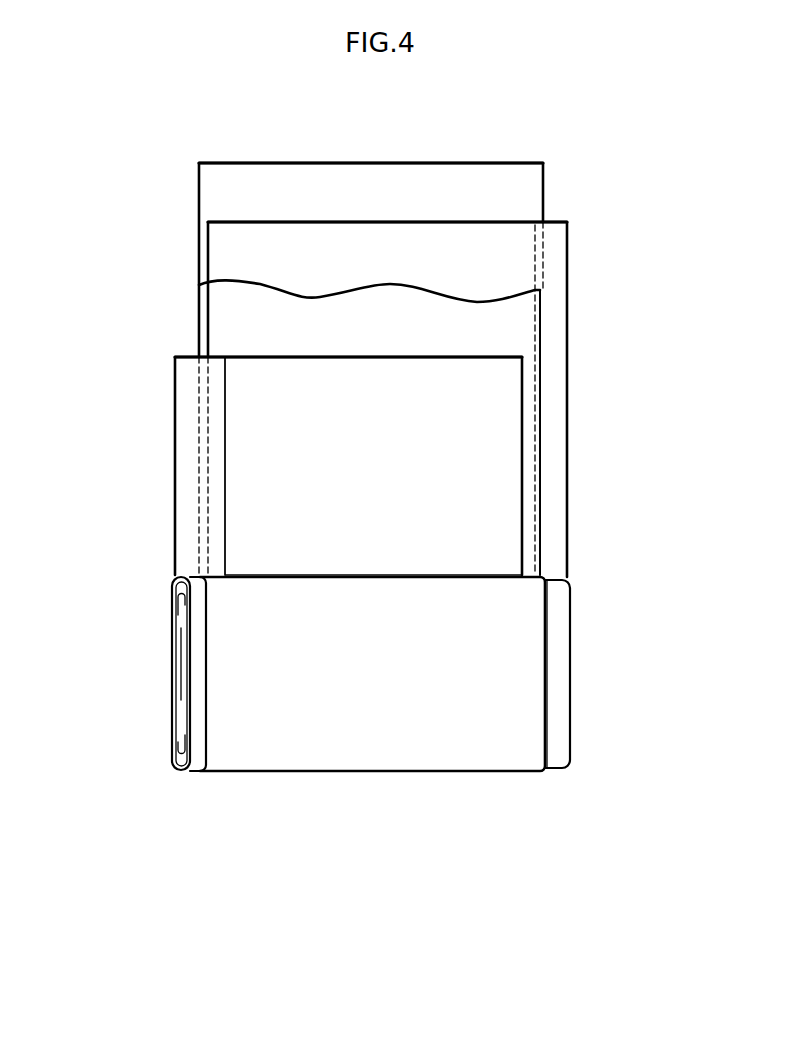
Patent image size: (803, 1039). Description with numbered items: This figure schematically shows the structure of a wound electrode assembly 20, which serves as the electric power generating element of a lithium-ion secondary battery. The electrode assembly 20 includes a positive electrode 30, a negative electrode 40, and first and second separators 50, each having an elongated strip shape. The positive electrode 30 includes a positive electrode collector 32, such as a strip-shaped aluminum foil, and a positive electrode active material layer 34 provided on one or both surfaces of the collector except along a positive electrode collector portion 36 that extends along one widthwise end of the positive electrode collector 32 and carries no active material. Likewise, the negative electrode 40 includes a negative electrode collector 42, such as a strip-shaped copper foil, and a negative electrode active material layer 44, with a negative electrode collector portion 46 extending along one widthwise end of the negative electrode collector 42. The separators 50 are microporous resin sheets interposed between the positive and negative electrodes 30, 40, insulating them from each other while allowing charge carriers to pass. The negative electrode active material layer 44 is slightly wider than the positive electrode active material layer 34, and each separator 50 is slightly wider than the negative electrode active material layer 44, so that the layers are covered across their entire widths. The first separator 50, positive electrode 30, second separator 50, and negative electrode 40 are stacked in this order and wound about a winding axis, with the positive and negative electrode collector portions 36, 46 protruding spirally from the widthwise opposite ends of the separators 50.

The electrode assembly 20 is at (278, 748).
The positive electrode 30 is at (175, 379).
The positive electrode collector 32 is at (140, 466).
The positive electrode active material layer 34 is at (237, 480).
The positive electrode collector portion 36 is at (190, 447).
The negative electrode 40 is at (567, 287).
The negative electrode collector 42 is at (615, 399).
The negative electrode active material layer 44 is at (530, 247).
The negative electrode collector portion 46 is at (548, 360).
The separator 50 is at (220, 183).